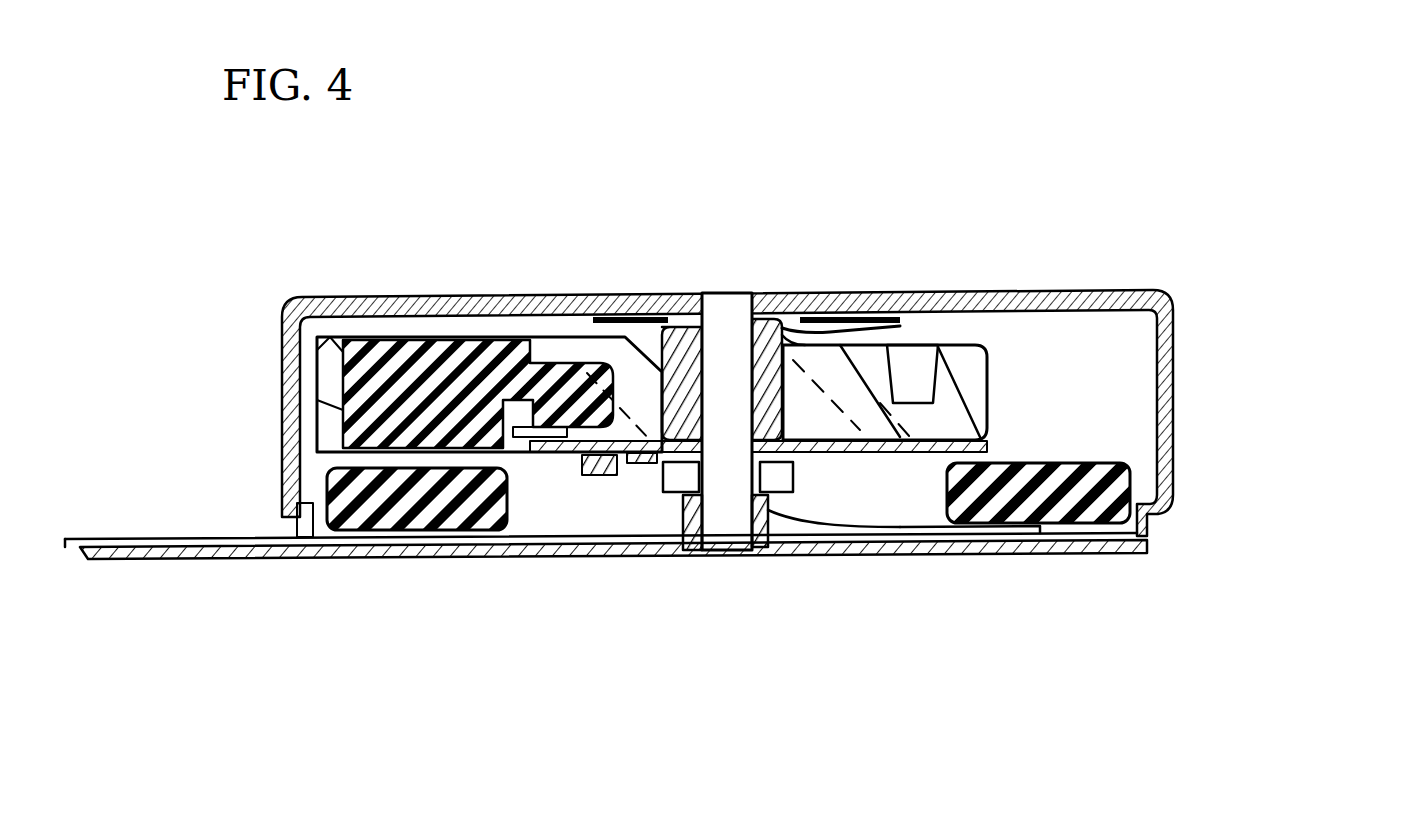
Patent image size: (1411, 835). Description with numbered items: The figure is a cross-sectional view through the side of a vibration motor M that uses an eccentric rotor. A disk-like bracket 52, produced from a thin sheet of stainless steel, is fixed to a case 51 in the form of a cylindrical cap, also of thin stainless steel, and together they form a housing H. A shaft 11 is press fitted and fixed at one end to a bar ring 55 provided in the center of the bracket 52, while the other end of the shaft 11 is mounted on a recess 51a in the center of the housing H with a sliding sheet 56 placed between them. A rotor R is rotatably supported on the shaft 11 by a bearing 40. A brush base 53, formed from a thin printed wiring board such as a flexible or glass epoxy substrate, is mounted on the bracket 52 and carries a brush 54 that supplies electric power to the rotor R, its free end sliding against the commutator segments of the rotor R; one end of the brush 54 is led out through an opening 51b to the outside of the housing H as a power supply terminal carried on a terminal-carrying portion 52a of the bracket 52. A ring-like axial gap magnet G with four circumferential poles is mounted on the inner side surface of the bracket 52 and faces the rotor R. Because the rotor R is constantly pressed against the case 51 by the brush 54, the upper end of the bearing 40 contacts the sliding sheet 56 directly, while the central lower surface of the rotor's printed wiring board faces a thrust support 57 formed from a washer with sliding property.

The shaft 11 is at (724, 335).
The bearing 40 is at (881, 325).
The case 51 is at (1135, 290).
The recess 51a is at (690, 295).
The opening 51b is at (290, 517).
The bracket 52 is at (987, 554).
The terminal-carrying portion 52a is at (128, 560).
The brush base 53 is at (900, 553).
The brush 54 is at (635, 460).
The bar ring 55 is at (663, 662).
The sliding sheet 56 is at (813, 292).
The thrust support 57 is at (812, 513).
The magnet G is at (392, 557).
The housing H is at (1030, 291).
The motor M is at (910, 242).
The rotor R is at (1003, 398).